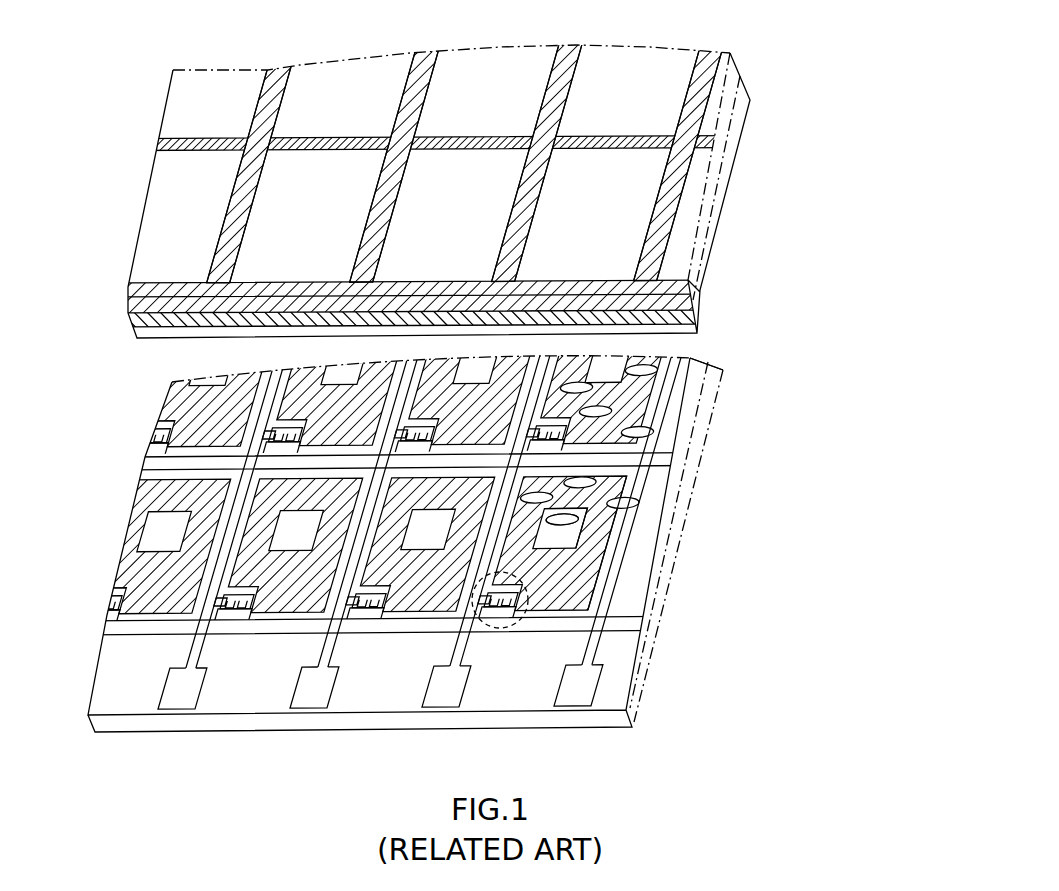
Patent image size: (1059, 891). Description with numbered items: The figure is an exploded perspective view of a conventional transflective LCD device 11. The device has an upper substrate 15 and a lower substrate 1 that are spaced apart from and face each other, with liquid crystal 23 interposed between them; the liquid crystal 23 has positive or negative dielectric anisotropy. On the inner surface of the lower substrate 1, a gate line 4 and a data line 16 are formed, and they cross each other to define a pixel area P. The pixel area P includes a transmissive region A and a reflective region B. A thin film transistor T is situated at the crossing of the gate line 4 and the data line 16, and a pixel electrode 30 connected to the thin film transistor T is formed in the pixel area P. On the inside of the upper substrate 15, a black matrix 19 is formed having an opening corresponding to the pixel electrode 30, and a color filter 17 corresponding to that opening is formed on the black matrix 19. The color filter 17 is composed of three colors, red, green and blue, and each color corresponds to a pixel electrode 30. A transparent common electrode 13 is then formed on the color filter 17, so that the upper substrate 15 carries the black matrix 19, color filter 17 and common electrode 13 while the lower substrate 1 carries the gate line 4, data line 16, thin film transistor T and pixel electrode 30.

The lower substrate 1 is at (313, 722).
The gate line 4 is at (621, 629).
The transflective LCD device 11 is at (803, 574).
The transparent common electrode 13 is at (697, 333).
The upper substrate 15 is at (128, 300).
The data line 16 is at (452, 657).
The color filter 17 is at (650, 215).
The black matrix 19 is at (717, 144).
The liquid crystal 23 is at (655, 405).
The pixel electrode 30 is at (612, 588).
The thin film transistor T is at (523, 627).
The transmissive region A is at (592, 519).
The pixel area P is at (614, 539).
The reflective region B is at (608, 559).